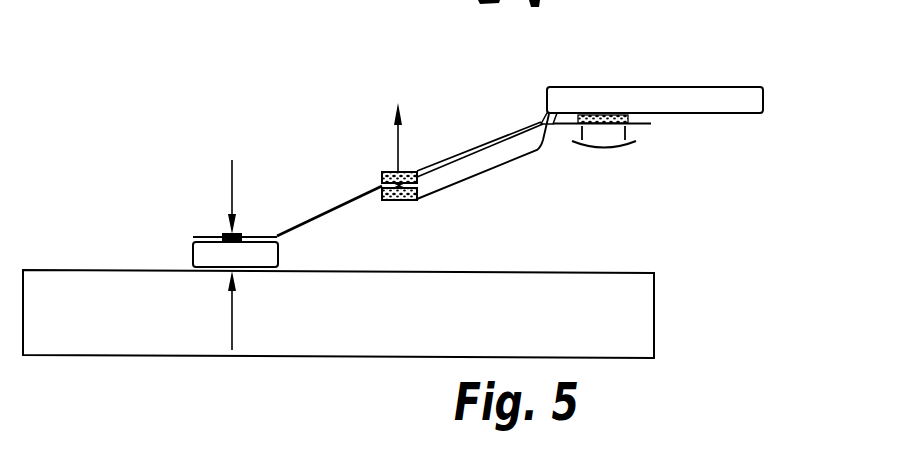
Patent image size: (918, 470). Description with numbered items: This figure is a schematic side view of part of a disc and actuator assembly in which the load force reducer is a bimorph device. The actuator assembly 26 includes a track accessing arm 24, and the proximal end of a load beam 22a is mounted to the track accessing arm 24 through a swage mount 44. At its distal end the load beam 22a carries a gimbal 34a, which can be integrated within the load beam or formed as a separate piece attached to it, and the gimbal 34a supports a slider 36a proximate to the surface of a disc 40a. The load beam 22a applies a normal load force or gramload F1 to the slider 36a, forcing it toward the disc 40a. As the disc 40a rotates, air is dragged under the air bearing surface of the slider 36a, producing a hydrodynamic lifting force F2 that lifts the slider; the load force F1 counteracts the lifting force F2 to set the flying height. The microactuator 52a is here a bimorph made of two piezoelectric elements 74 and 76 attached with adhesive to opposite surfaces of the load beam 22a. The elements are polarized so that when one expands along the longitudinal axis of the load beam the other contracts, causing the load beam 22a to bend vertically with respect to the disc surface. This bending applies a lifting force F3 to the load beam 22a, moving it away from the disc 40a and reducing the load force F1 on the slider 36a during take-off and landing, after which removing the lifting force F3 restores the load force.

The load beam 22a is at (333, 212).
The track accessing arm 24 is at (697, 88).
The actuator assembly 26 is at (619, 67).
The gimbal 34a is at (202, 236).
The slider 36a is at (185, 255).
The disc 40a is at (62, 356).
The swage mount 44 is at (668, 151).
The microactuator 52a is at (372, 137).
The piezoelectric element 74 is at (382, 178).
The piezoelectric element 76 is at (398, 200).
The load force F1 is at (232, 180).
The hydrodynamic lifting force F2 is at (232, 335).
The lifting force F3 is at (400, 129).